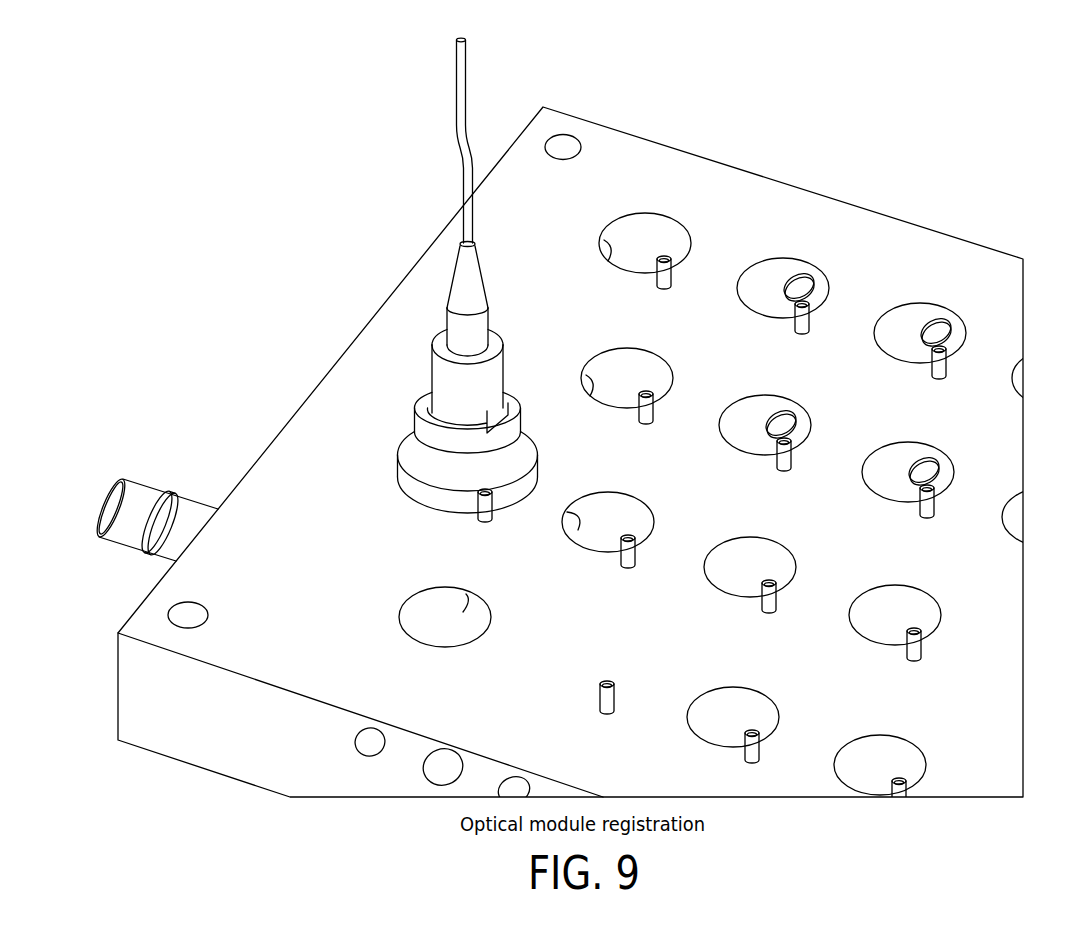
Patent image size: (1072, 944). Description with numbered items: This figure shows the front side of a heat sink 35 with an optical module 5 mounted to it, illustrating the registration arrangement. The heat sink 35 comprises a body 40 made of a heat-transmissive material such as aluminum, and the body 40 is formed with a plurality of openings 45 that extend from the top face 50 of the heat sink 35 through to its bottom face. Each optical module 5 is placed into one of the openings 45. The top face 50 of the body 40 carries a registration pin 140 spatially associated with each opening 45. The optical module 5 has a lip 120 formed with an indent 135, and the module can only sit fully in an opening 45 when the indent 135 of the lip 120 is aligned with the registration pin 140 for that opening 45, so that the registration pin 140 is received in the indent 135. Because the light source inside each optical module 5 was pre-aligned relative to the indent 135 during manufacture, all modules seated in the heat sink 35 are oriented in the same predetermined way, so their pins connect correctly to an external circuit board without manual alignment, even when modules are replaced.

The optical module 5 is at (426, 301).
The heat sink 35 is at (582, 416).
The body 40 is at (688, 147).
The opening 45 is at (580, 524).
The top face 50 is at (726, 359).
The lip 120 is at (392, 476).
The indent 135 is at (477, 499).
The registration pin 140 is at (636, 567).